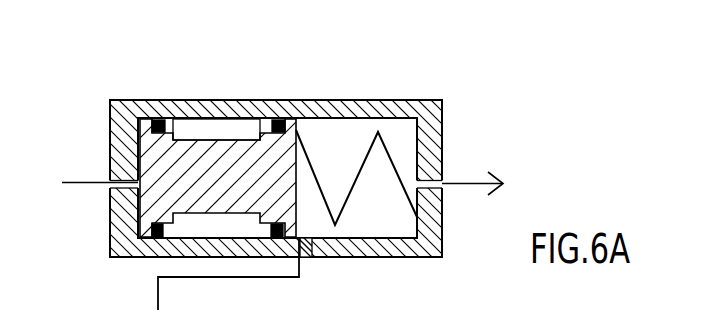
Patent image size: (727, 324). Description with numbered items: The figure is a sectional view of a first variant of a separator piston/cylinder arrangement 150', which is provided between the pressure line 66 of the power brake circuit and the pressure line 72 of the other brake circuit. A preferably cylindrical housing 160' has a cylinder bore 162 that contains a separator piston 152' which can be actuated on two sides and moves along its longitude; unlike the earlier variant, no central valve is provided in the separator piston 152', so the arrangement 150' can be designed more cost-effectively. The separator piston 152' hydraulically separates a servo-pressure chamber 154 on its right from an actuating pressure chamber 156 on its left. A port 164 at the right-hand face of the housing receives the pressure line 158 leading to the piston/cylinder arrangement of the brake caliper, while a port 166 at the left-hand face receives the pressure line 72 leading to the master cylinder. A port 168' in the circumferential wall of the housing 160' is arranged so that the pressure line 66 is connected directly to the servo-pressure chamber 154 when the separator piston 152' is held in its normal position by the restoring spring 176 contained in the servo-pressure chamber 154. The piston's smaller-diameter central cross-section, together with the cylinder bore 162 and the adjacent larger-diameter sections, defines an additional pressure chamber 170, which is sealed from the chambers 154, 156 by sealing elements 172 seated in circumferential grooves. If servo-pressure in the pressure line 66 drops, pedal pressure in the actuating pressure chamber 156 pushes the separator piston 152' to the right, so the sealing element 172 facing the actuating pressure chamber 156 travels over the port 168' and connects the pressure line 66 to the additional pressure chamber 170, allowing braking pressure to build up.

The separator piston/cylinder arrangement 150' is at (300, 176).
The separator piston 152' is at (220, 186).
The servo-pressure chamber 154 is at (300, 174).
The actuating pressure chamber 156 is at (139, 135).
The pressure line 158 is at (467, 182).
The housing 160' is at (276, 277).
The cylinder bore 162 is at (337, 118).
The port 164 is at (442, 190).
The port 166 is at (110, 188).
The port 168' is at (326, 270).
The additional pressure chamber 170 is at (225, 132).
The sealing elements 172 is at (157, 242).
The restoring spring 176 is at (302, 126).
The pressure line 66 is at (238, 277).
The pressure line 72 is at (78, 181).